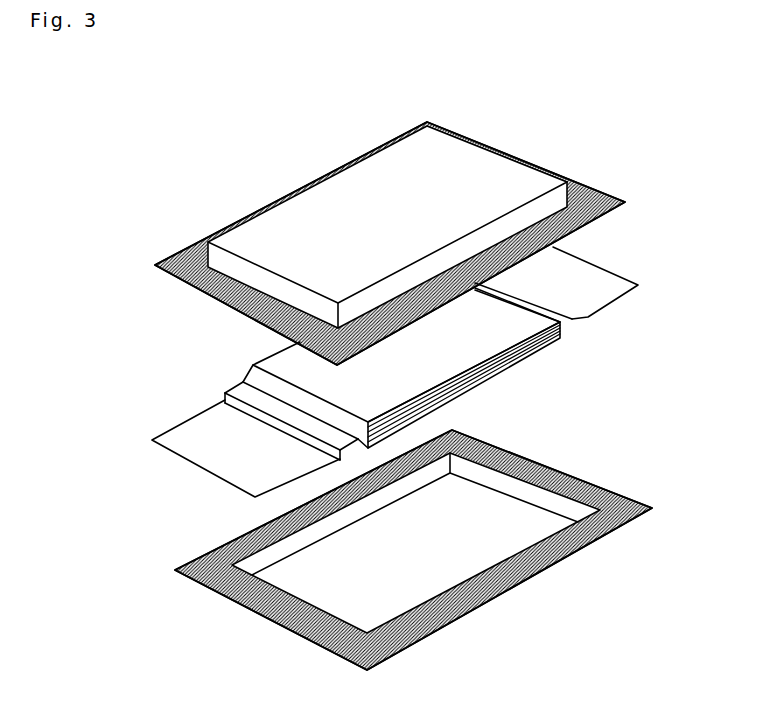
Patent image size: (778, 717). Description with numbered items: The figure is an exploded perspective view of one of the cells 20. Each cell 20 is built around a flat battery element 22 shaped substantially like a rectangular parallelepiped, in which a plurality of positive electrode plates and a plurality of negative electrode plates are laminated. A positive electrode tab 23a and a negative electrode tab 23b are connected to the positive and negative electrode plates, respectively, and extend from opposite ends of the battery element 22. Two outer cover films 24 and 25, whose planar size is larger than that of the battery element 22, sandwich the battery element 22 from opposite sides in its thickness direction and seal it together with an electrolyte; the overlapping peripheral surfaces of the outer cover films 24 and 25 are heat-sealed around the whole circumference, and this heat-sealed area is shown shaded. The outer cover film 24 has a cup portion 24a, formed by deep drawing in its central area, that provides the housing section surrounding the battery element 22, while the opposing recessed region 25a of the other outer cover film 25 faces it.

The cell 20 is at (166, 168).
The battery element 22 is at (531, 360).
The positive electrode tab 23a is at (221, 455).
The negative electrode tab 23b is at (592, 292).
The outer cover film 24 is at (458, 132).
The cup portion 24a is at (364, 183).
The outer cover film 25 is at (241, 603).
The recess of lower plate 25a is at (493, 507).